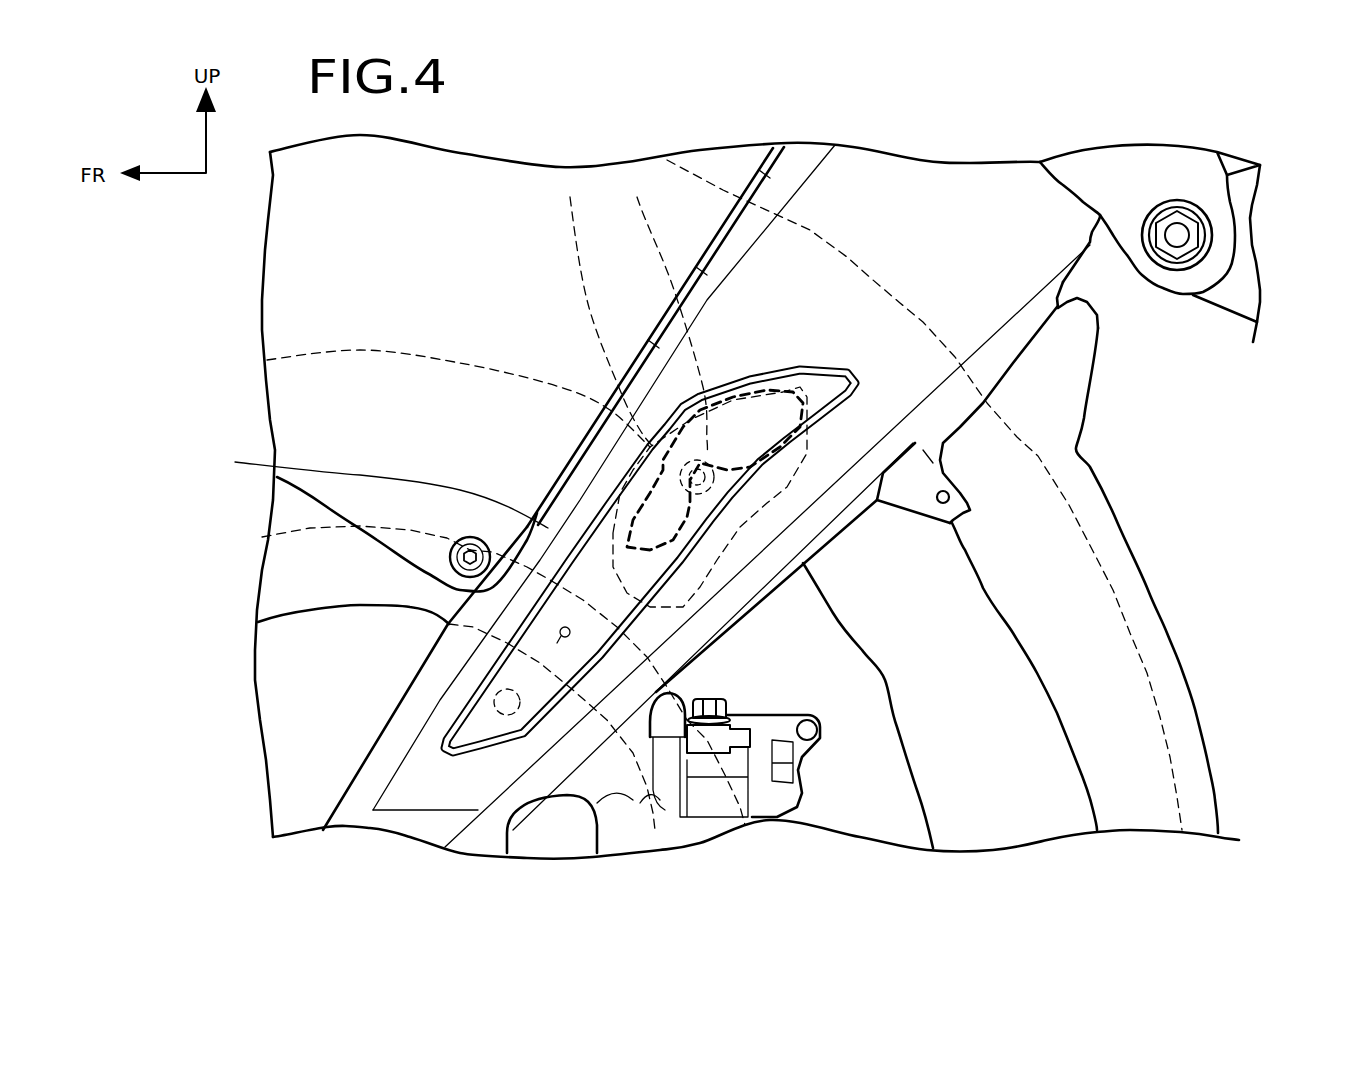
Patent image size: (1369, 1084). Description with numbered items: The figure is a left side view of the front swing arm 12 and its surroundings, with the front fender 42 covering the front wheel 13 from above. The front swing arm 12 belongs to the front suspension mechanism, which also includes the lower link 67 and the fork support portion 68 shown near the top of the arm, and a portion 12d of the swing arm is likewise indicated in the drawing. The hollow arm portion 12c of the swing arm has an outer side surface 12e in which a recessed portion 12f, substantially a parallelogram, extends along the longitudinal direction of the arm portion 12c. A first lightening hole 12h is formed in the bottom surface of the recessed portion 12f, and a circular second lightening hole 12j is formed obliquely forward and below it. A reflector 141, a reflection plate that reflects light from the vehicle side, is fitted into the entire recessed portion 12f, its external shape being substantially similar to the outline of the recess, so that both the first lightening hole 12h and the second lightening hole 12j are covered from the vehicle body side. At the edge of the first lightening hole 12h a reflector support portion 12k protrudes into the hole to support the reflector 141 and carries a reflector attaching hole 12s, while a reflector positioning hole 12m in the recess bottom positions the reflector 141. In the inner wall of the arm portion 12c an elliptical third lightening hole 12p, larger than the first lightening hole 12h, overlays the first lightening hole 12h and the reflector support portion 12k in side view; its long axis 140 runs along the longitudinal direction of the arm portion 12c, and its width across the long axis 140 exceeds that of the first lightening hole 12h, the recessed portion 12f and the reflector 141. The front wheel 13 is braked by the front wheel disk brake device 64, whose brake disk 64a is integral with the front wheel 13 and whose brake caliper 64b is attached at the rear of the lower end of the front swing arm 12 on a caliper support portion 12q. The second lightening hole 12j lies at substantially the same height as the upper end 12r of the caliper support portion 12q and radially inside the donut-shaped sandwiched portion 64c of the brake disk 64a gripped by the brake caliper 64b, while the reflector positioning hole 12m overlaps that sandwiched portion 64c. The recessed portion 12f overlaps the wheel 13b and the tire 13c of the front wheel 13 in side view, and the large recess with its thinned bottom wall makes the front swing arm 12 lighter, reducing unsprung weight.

The front swing arm 12 is at (963, 187).
The arm portion 12c is at (709, 284).
The frame upper portion 12d is at (905, 190).
The outer side surface 12e is at (747, 285).
The recessed portion 12f is at (848, 390).
The first lightening hole 12h is at (757, 387).
The second lightening hole 12j is at (475, 809).
The reflector support portion 12k is at (637, 197).
The reflector positioning hole 12m is at (567, 786).
The third lightening hole 12p is at (940, 531).
The caliper support portion 12q is at (618, 830).
The upper end 12r is at (677, 810).
The reflector attaching hole 12s is at (570, 197).
The front wheel 13 is at (983, 812).
The wheel 13b is at (927, 820).
The tire 13c is at (1037, 817).
The front fender 42 is at (293, 250).
The front wheel disk brake device 64 is at (733, 822).
The brake disk 64a is at (245, 576).
The brake caliper 64b is at (713, 817).
The sandwiched portion 64c is at (260, 622).
The lower link 67 is at (1243, 285).
The fork support portion 68 is at (1167, 163).
The long axis 140 is at (757, 380).
The reflector 141 is at (277, 477).